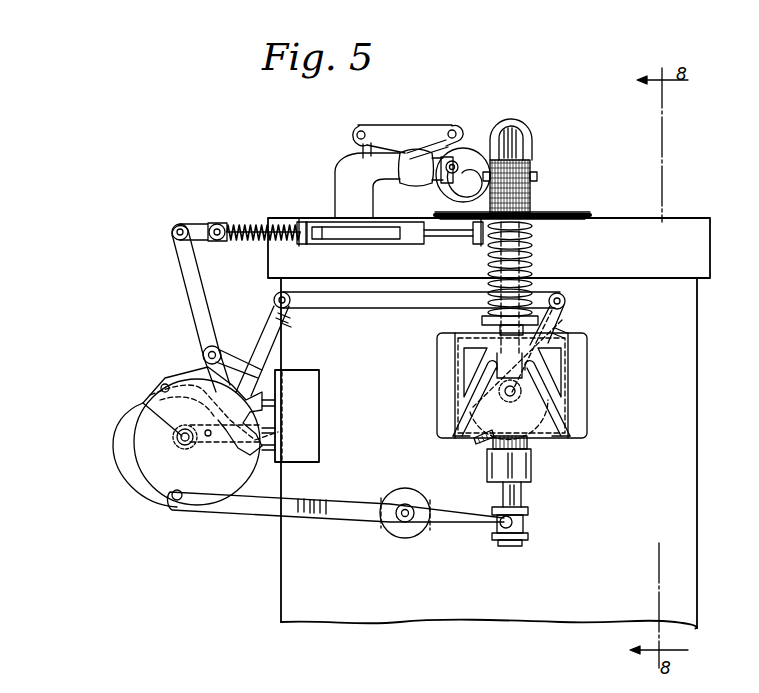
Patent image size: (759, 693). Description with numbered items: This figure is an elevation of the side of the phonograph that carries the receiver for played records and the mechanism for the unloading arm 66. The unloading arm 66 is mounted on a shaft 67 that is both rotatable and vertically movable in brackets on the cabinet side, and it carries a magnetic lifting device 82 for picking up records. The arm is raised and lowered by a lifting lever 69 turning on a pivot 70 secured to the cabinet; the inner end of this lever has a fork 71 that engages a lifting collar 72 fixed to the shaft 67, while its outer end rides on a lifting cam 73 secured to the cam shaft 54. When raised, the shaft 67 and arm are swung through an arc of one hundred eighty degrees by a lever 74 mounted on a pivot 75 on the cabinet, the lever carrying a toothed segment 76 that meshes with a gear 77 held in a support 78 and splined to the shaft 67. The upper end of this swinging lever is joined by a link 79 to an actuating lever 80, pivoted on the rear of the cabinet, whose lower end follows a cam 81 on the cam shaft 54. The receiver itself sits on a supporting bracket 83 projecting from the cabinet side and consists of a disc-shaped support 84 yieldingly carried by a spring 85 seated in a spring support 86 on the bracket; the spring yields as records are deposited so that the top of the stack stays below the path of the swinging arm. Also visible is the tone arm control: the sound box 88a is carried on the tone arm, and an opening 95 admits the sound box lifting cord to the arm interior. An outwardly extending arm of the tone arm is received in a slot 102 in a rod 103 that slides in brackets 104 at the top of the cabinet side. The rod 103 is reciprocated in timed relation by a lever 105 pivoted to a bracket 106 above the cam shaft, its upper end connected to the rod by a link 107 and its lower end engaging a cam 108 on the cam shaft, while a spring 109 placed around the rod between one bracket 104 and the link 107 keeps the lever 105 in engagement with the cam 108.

The cam shaft 54 is at (181, 439).
The unloading arm 66 is at (520, 130).
The shaft 67 is at (522, 497).
The lifting lever 69 is at (348, 508).
The pivot 70 is at (405, 519).
The fork 71 is at (500, 528).
The lifting collar 72 is at (528, 534).
The lifting cam 73 is at (166, 480).
The lever 74 is at (545, 330).
The pivot 75 is at (525, 395).
The toothed segment 76 is at (474, 440).
The gear 77 is at (528, 442).
The support 78 is at (532, 466).
The link 79 is at (400, 298).
The actuating lever 80 is at (262, 345).
The cam 81 is at (160, 386).
The magnetic lifting device 82 is at (533, 186).
The supporting bracket 83 is at (452, 362).
The disc-shaped support 84 is at (556, 216).
The spring 85 is at (536, 248).
The spring support 86 is at (478, 321).
The sound box 88a is at (470, 140).
The opening 95 is at (350, 170).
The slot 102 is at (350, 236).
The rod 103 is at (250, 236).
The brackets 104 is at (300, 246).
The lever 105 is at (196, 300).
The bracket 106 is at (228, 356).
The link 107 is at (190, 222).
The cam 108 is at (120, 412).
The spring 109 is at (255, 222).